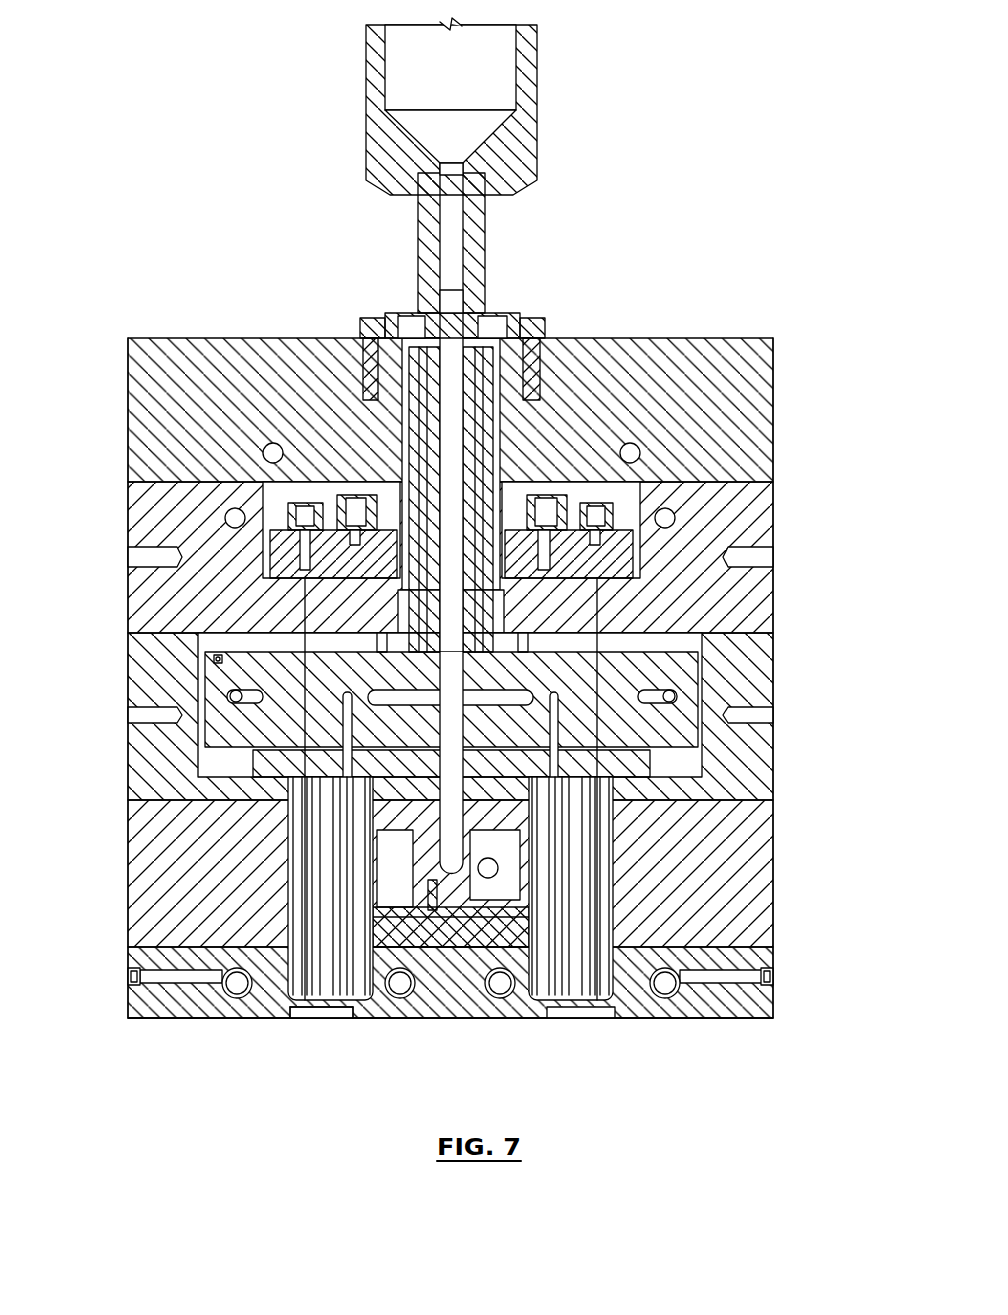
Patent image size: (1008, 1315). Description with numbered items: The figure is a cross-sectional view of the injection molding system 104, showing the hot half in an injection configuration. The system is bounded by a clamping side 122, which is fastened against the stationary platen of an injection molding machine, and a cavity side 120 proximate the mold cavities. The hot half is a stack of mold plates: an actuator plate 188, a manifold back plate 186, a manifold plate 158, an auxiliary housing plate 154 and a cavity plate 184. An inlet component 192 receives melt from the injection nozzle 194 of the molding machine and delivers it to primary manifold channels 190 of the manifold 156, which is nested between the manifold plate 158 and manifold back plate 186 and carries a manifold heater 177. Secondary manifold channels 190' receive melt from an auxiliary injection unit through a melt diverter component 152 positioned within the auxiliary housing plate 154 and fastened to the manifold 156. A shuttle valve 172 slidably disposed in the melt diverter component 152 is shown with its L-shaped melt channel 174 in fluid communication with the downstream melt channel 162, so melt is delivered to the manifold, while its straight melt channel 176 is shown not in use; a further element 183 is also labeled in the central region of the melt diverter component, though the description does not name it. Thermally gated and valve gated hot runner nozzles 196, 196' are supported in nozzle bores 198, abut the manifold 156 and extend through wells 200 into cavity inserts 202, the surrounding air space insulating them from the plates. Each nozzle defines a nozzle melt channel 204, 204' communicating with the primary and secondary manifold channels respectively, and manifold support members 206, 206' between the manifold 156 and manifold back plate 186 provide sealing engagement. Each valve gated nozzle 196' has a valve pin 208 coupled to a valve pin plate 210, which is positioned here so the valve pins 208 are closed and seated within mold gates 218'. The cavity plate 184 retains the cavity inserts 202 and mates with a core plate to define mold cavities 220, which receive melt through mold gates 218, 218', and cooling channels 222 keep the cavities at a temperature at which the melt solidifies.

The injection molding system 104 is at (119, 314).
The injection nozzle 194 is at (378, 200).
The clamping side 122 is at (640, 338).
The actuator plate 188 is at (752, 413).
The inlet component 192 is at (470, 456).
The valve pin plate 210 is at (624, 543).
The manifold back plate 186 is at (752, 598).
The manifold support member 206' is at (296, 564).
The manifold support member 206 is at (475, 567).
The primary manifold channel 190 is at (500, 636).
The manifold heater 177 is at (220, 662).
The manifold 156 is at (230, 684).
The valve pin 208 is at (303, 726).
The secondary manifold channel 190' is at (513, 715).
The manifold plate 158 is at (752, 735).
The nozzle bore 198 is at (290, 798).
The valve pin 183 is at (420, 784).
The thermally gated hot runner nozzle 196 is at (281, 886).
The downstream melt channel 162 is at (540, 828).
The valve gated hot runner nozzle 196' is at (232, 886).
The well 200 is at (300, 876).
The L-shaped melt channel 174 is at (545, 843).
The nozzle melt channel 204 is at (281, 886).
The shuttle valve 172 is at (515, 880).
The nozzle melt channel 204' is at (279, 886).
The auxiliary housing plate 154 is at (752, 898).
The cavity plate 184 is at (772, 998).
The cavity insert 202 is at (256, 1018).
The mold gate 218' is at (265, 1059).
The mold cavity 220 is at (326, 1018).
The mold gate 218 is at (337, 1063).
The cooling channel 222 is at (396, 1018).
The melt diverter component 152 is at (443, 1018).
The straight melt channel 176 is at (518, 1018).
The cavity side 120 is at (681, 1018).